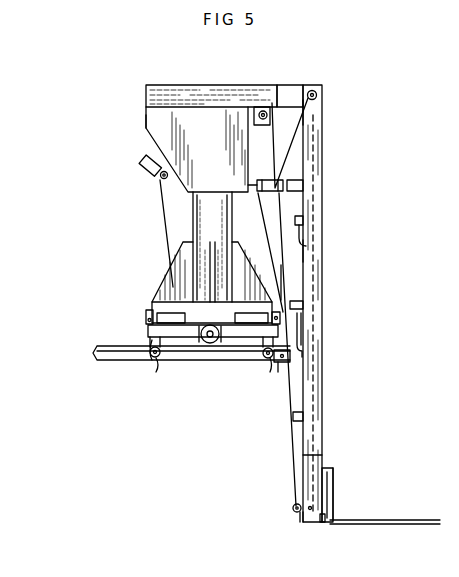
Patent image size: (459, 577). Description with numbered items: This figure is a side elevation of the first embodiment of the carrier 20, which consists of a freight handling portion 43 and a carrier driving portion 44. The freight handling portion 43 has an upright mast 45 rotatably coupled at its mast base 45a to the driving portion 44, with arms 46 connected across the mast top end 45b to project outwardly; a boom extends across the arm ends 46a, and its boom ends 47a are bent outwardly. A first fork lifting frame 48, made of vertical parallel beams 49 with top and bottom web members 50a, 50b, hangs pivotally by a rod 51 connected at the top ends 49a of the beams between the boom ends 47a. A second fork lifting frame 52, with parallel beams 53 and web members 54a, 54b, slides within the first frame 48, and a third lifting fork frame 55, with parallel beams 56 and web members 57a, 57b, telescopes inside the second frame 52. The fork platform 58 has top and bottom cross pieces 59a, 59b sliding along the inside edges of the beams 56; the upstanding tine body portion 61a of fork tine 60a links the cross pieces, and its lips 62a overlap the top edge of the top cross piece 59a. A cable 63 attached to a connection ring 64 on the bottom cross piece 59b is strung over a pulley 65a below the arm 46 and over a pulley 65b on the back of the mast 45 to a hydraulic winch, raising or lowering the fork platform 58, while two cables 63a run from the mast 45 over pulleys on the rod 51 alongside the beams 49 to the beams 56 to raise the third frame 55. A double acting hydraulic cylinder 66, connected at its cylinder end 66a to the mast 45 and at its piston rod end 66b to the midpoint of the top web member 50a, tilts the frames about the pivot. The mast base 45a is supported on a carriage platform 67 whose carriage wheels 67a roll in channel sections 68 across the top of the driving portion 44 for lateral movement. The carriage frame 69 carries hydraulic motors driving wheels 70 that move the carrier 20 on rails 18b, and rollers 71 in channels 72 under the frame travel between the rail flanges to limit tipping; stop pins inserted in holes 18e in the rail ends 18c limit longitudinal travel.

The rails 18b is at (103, 357).
The rail section ends 18c is at (283, 362).
The holes 18e is at (277, 364).
The carrier 20 is at (404, 88).
The freight handling portion 43 is at (154, 232).
The carrier driving portion 44 is at (130, 330).
The mast 45 is at (185, 210).
The mast base 45a is at (150, 273).
The mast top end 45b is at (150, 126).
The arms 46 is at (205, 88).
The arm ends 46a is at (283, 90).
The boom ends 47a is at (300, 92).
The first fork lifting frame 48 is at (344, 196).
The vertical parallel beams 49 is at (305, 222).
The top ends of beams 49a is at (305, 110).
The top web member 50a is at (297, 187).
The bottom web member 50b is at (293, 306).
The rod 51 is at (318, 96).
The second fork lifting frame 52 is at (343, 331).
The vertical parallel beams 53 is at (315, 396).
The top web member 54a is at (307, 252).
The bottom web member 54b is at (303, 416).
The third lifting fork frame 55 is at (338, 441).
The vertical parallel beams 56 is at (317, 454).
The top web member 57a is at (302, 357).
The bottom web member 57b is at (299, 520).
The fork platform 58 is at (350, 499).
The top cross piece 59a is at (324, 478).
The bottom cross piece 59b is at (321, 525).
The fork tine 60a is at (376, 526).
The tine body portion 61a is at (340, 497).
The lips 62a is at (288, 472).
The cable 63 is at (283, 266).
The cables 63a is at (250, 242).
The connection ring 64 is at (292, 510).
The pulley 65a is at (272, 116).
The pulley 65b is at (150, 162).
The double acting hydraulic cylinder 66 is at (280, 192).
The cylinder end 66a is at (282, 196).
The piston rod end 66b is at (208, 149).
The carriage platform 67 is at (157, 307).
The carriage wheels 67a is at (147, 313).
The channel sections 68 is at (147, 329).
The carriage frame 69 is at (147, 347).
The drive wheels 70 is at (201, 340).
The rollers 71 is at (156, 360).
The channels 72 is at (147, 352).